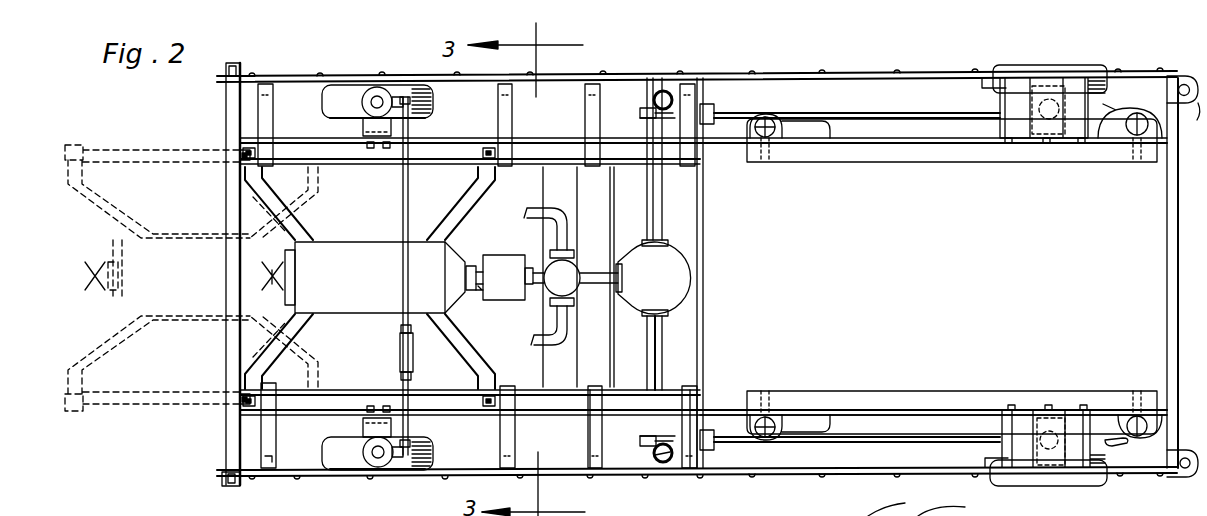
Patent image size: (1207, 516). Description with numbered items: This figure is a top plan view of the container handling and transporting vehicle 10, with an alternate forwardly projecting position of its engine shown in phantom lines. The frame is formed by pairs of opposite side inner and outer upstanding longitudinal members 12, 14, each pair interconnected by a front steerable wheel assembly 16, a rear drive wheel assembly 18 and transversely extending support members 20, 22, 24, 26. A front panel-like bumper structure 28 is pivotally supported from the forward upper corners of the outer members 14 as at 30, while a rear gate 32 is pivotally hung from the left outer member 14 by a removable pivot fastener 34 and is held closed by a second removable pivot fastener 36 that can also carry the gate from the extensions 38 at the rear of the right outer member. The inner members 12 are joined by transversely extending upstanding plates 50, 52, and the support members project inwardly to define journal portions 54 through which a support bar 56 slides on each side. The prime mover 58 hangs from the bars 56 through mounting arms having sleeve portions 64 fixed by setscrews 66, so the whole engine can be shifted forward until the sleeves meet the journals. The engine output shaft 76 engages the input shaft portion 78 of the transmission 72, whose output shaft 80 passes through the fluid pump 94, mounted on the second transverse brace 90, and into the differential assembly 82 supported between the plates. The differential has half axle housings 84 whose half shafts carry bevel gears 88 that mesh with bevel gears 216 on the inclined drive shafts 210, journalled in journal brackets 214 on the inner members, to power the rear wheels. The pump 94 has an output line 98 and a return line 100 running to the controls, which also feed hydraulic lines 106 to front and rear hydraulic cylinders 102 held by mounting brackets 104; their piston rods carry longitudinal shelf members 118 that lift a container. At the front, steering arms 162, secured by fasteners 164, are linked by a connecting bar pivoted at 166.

The container handling and transporting vehicle 10 is at (770, 72).
The inner upstanding longitudinal member 12 is at (720, 410).
The outer upstanding longitudinal member 14 is at (773, 472).
The front steerable wheel assembly 16 is at (379, 302).
The rear drive wheel assembly 18 is at (1111, 457).
The transverse support member 20 is at (266, 447).
The transverse support member 22 is at (510, 446).
The transverse support member 24 is at (590, 452).
The transverse support member 26 is at (688, 462).
The panel-like bumper structure 28 is at (232, 436).
The pivot 30 is at (224, 481).
The gate 32 is at (1170, 305).
The removable pivot fastener 34 is at (1186, 470).
The removable pivot fastener 36 is at (1187, 108).
The extension 38 is at (1182, 83).
The transversely extending upstanding plate 50 is at (702, 338).
The transversely extending upstanding plate 52 is at (612, 372).
The journal portion 54 is at (272, 160).
The support bar 56 is at (440, 152).
The prime mover 58 is at (370, 278).
The sleeve portion 64 is at (243, 160).
The setscrew 66 is at (240, 152).
The transmission 72 is at (513, 251).
The output shaft 76 is at (477, 265).
The input shaft portion 78 is at (478, 294).
The output shaft 80 is at (503, 254).
The differential assembly 82 is at (686, 263).
The half axle housing 84 is at (665, 232).
The bevel gear 88 is at (647, 116).
The second transverse brace 90 is at (568, 405).
The fluid pump 94 is at (588, 263).
The output line 98 is at (560, 228).
The return line 100 is at (578, 320).
The hydraulic cylinder 102 is at (768, 138).
The mounting bracket 104 is at (826, 134).
The hydraulic line 106 is at (1113, 110).
The shelf member 118 is at (958, 160).
The steering arm 162 is at (398, 470).
The fastener 164 is at (405, 258).
The pivot 166 is at (426, 469).
The drive shaft 210 is at (878, 442).
The journal bracket 214 is at (708, 428).
The bevel gear 216 is at (655, 458).